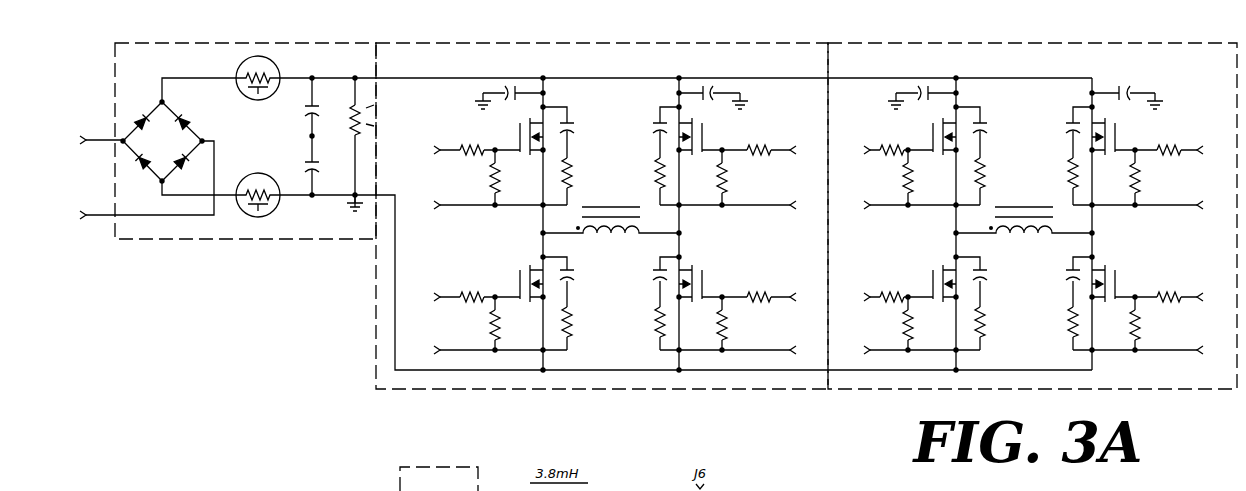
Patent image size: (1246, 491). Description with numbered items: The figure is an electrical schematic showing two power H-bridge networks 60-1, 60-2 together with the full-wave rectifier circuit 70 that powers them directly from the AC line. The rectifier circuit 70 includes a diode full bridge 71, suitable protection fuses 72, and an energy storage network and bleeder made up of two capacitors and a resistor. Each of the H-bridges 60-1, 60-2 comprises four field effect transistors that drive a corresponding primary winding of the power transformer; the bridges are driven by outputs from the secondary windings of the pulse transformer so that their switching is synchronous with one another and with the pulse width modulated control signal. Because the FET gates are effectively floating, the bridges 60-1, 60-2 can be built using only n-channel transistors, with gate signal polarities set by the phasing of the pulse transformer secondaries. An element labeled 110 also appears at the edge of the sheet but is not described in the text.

The full-wave rectifier circuit 70 is at (258, 239).
The diode full bridge 71 is at (162, 141).
The protection fuses 72 is at (240, 92).
The H-bridge 60-1 is at (602, 227).
The H-bridge 60-2 is at (1032, 227).
The inductor 110 is at (606, 489).